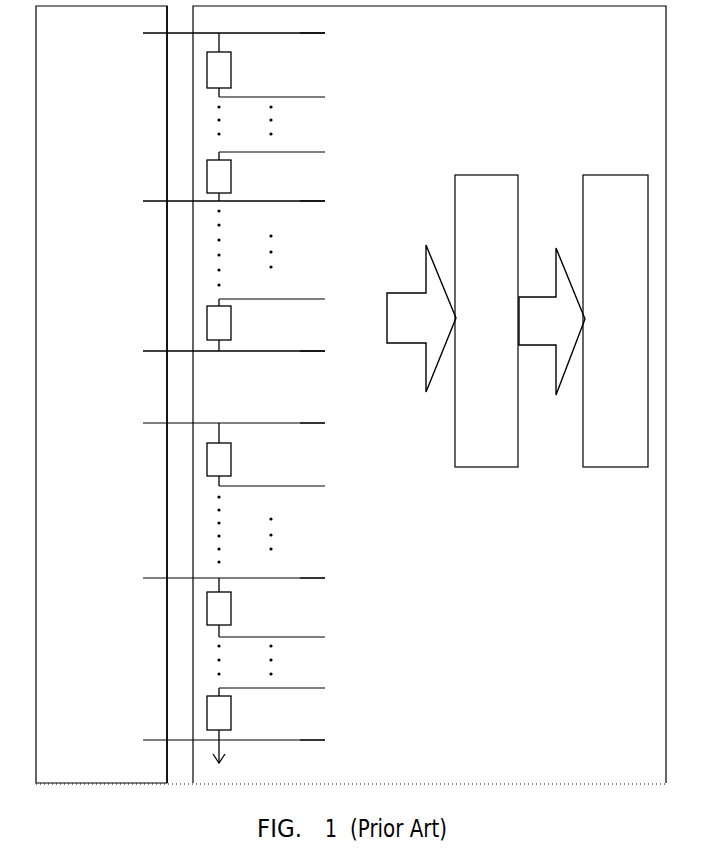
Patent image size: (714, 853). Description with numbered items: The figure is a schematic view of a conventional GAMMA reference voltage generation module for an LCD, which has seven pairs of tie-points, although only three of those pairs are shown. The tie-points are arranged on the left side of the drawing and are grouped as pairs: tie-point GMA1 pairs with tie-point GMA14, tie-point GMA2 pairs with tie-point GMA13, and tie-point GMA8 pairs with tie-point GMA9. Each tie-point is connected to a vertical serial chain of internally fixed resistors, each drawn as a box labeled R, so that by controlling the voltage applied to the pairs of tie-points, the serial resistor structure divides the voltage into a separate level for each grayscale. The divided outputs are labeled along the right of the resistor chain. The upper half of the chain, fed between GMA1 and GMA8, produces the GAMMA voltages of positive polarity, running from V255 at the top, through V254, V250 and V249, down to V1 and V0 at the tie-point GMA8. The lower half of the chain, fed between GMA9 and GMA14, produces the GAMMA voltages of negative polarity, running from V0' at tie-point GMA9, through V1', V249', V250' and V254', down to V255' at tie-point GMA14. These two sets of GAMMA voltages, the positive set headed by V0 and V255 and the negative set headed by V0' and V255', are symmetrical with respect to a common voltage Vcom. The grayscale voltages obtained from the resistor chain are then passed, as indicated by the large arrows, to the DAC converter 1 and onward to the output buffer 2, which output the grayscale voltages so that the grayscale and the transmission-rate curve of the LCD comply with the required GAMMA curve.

The DAC converter 1 is at (487, 175).
The output buffer 2 is at (613, 175).
The resistor of the resistor string R is at (240, 398).
The tie-point GMA1 is at (193, 33).
The tie-point GMA2 is at (192, 200).
The tie-point GMA8 is at (192, 353).
The tie-point GMA9 is at (191, 422).
The tie-point GMA13 is at (187, 578).
The tie-point GMA14 is at (186, 740).
The GAMMA voltage of positive polarity V255 is at (344, 34).
The GAMMA voltage of positive polarity V254 is at (303, 98).
The GAMMA voltage of positive polarity V250 is at (303, 153).
The GAMMA voltage of positive polarity V249 is at (344, 202).
The GAMMA voltage of positive polarity V1 is at (292, 300).
The GAMMA voltage of positive polarity V0 is at (332, 352).
The GAMMA voltage of negative polarity V0' is at (336, 424).
The GAMMA voltage of negative polarity V1' is at (295, 487).
The GAMMA voltage of negative polarity V249' is at (347, 579).
The GAMMA voltage of negative polarity V250' is at (307, 638).
The GAMMA voltage of negative polarity V254' is at (307, 689).
The GAMMA voltage of negative polarity V255' is at (347, 741).